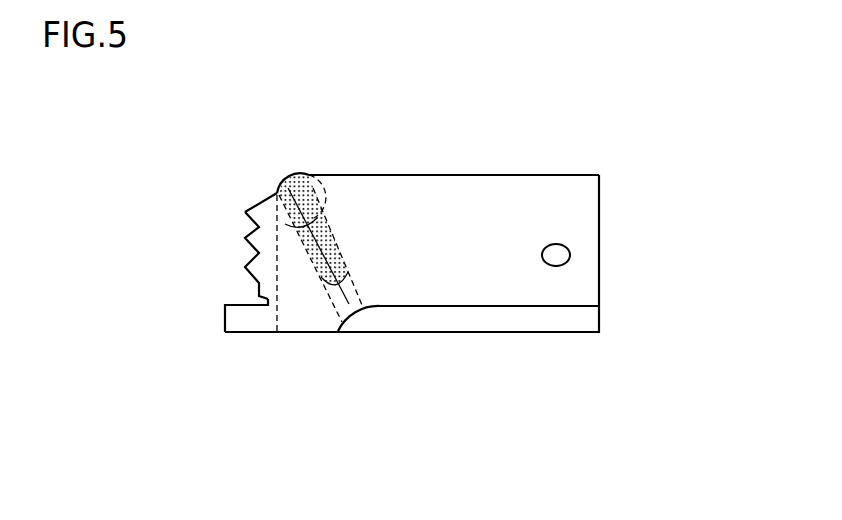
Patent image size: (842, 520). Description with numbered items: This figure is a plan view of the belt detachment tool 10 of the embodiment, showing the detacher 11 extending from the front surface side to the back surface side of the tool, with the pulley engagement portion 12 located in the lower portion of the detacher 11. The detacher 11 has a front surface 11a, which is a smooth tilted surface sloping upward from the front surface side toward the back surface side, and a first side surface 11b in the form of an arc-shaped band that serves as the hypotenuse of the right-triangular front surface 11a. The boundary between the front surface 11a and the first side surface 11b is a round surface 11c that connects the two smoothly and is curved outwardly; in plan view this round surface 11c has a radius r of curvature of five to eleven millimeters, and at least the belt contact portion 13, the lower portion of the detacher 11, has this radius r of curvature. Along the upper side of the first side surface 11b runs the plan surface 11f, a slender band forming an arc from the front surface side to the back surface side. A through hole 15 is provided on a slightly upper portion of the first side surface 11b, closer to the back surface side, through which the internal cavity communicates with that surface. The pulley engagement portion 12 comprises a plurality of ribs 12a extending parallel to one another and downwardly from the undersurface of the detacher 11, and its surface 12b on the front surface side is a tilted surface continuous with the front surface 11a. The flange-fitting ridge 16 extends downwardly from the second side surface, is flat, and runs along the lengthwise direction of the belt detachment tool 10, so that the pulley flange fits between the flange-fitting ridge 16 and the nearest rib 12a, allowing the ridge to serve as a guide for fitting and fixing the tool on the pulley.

The belt detachment tool 10 is at (552, 133).
The detacher 11 is at (600, 250).
The front surface 11a is at (303, 310).
The first side surface 11b is at (400, 193).
The round surface 11c is at (345, 313).
The plan surface 11f is at (475, 315).
The pulley engagement portion 12 is at (248, 210).
The ribs 12a is at (245, 221).
The surface 12b is at (268, 240).
The belt contact portion 13 is at (338, 263).
The through hole 15 is at (557, 257).
The flange-fitting ridge 16 is at (237, 317).
The radius of curvature r is at (290, 192).